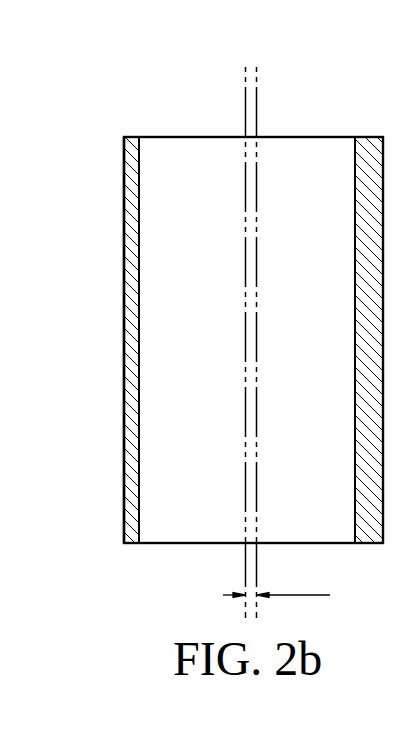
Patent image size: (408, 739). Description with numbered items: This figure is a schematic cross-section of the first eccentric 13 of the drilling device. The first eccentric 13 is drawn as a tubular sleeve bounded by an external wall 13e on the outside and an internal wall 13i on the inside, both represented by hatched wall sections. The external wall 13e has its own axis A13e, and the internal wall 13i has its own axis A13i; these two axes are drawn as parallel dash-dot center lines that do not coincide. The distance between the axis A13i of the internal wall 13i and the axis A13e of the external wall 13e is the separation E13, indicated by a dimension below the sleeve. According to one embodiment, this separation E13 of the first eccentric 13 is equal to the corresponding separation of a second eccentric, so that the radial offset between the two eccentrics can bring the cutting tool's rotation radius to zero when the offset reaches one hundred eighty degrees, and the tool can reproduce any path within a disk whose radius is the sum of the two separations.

The first eccentric 13 is at (311, 111).
The external wall 13e is at (112, 229).
The internal wall 13i is at (153, 261).
The axis of the internal wall A13i is at (234, 77).
The axis of the external wall A13e is at (268, 82).
The separation E13 is at (276, 580).